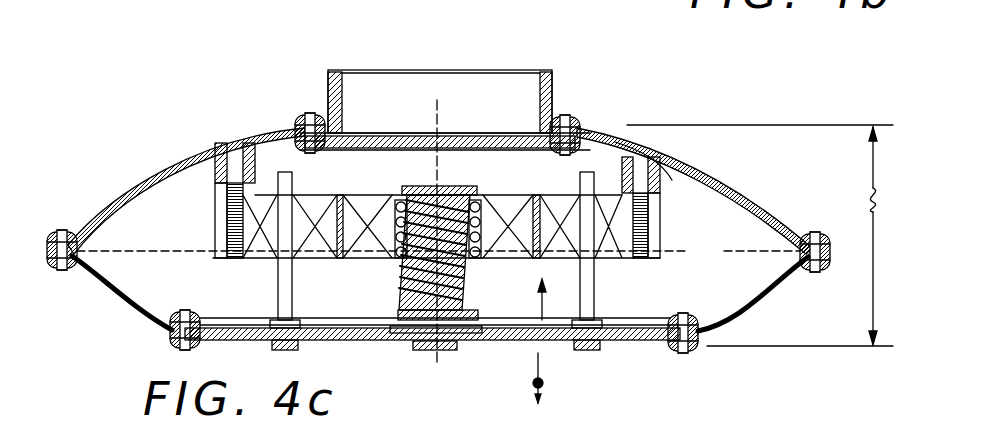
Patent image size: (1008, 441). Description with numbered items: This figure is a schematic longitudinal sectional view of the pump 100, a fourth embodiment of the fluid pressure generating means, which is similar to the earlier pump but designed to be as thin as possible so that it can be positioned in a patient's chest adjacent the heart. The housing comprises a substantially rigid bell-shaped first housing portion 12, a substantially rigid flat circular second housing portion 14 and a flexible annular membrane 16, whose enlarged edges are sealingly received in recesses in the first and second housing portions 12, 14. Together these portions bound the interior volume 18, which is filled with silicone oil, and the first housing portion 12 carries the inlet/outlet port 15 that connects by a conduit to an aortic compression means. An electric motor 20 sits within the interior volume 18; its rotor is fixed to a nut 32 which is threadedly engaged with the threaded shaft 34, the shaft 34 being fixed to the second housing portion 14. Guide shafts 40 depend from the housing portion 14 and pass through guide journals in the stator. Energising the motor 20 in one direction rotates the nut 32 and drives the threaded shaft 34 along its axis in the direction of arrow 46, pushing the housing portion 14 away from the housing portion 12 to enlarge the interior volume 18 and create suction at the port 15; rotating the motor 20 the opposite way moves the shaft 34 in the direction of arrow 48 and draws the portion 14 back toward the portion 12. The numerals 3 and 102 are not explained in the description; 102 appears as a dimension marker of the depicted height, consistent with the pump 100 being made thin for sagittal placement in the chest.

The pump 100 is at (196, 104).
The first housing portion 12 is at (150, 177).
The electric motor 20 is at (683, 170).
The inlet/outlet port 15 is at (553, 93).
The interior volume 18 is at (307, 297).
The shaft 40 is at (290, 184).
The threaded shaft 34 is at (447, 197).
The nut 32 is at (397, 210).
The membrane 16 is at (130, 313).
The arrow 46 is at (655, 357).
The second housing portion 14 is at (357, 340).
The arrow 48 is at (540, 312).
The axis 3 is at (567, 378).
The height dimension 102 is at (760, 235).